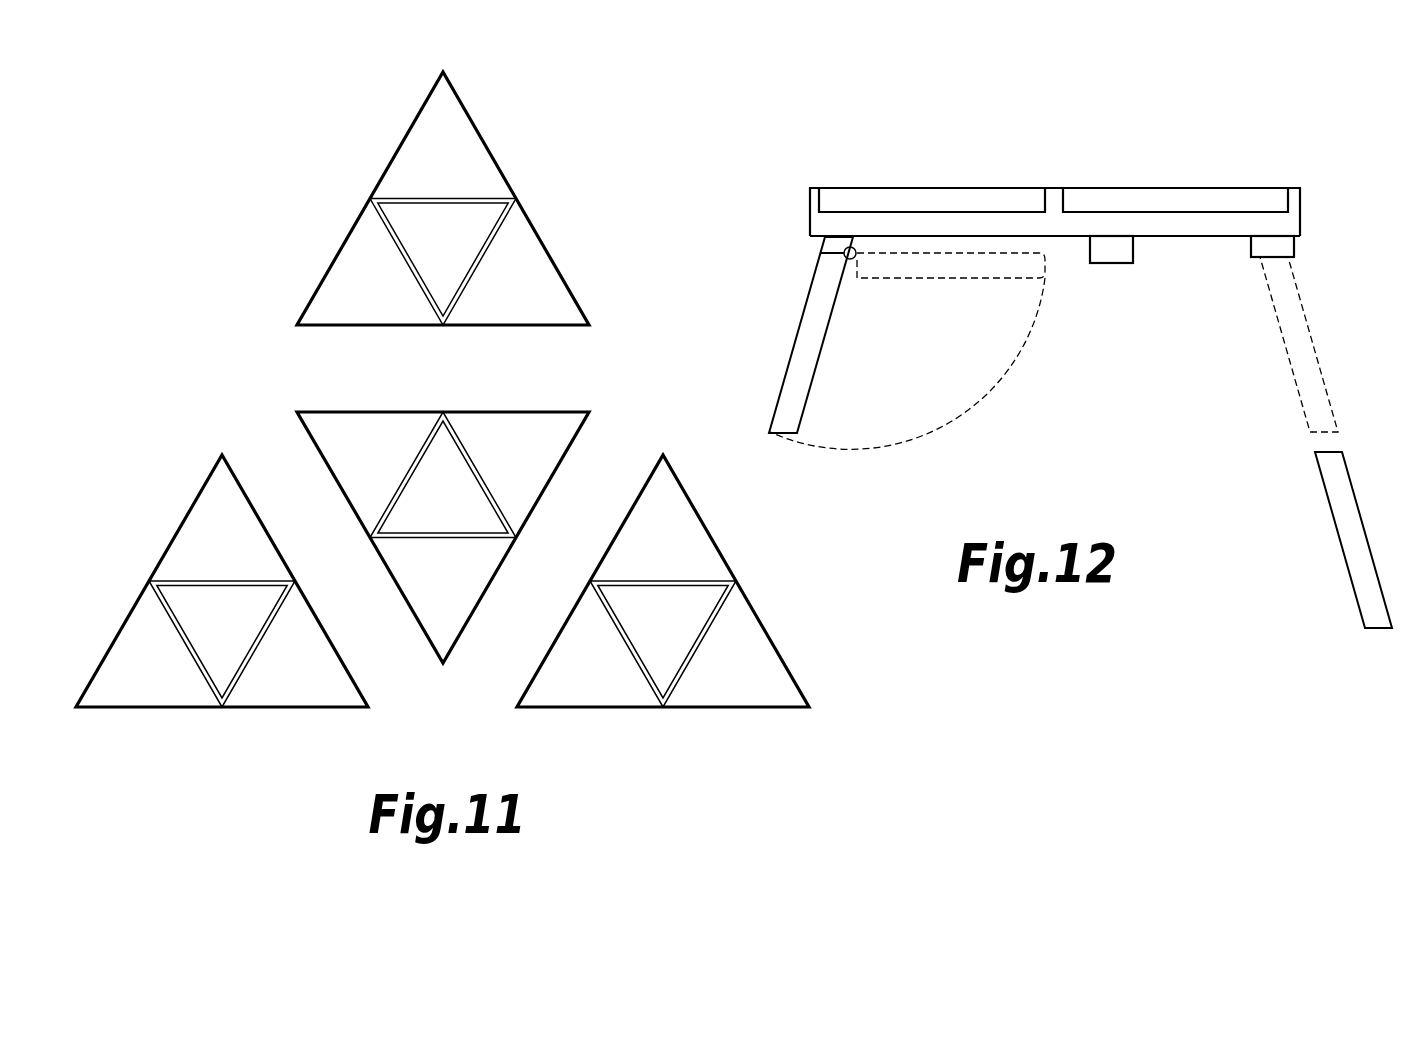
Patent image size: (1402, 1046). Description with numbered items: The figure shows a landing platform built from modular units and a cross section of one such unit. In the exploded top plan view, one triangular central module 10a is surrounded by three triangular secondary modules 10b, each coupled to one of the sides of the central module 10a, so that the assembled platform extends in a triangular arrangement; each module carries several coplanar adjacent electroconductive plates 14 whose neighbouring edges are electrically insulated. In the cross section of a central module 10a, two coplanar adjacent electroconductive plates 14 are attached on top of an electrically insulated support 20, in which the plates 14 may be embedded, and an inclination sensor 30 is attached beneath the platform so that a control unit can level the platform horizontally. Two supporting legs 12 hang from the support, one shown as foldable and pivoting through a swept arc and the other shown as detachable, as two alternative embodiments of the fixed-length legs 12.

In FIG. 11, the central module 10a is at (300, 412).
In FIG. 12, the central module 10a is at (810, 212).
In FIG. 11, the secondary module 10b is at (370, 198).
In FIG. 11, the electroconductive plate 14 is at (442, 423).
In FIG. 12, the electroconductive plate 14 is at (927, 196).
In FIG. 12, the supporting leg 12 is at (805, 347).
In FIG. 12, the electrically insulated support 20 is at (1192, 228).
In FIG. 12, the inclination sensor 30 is at (1114, 252).